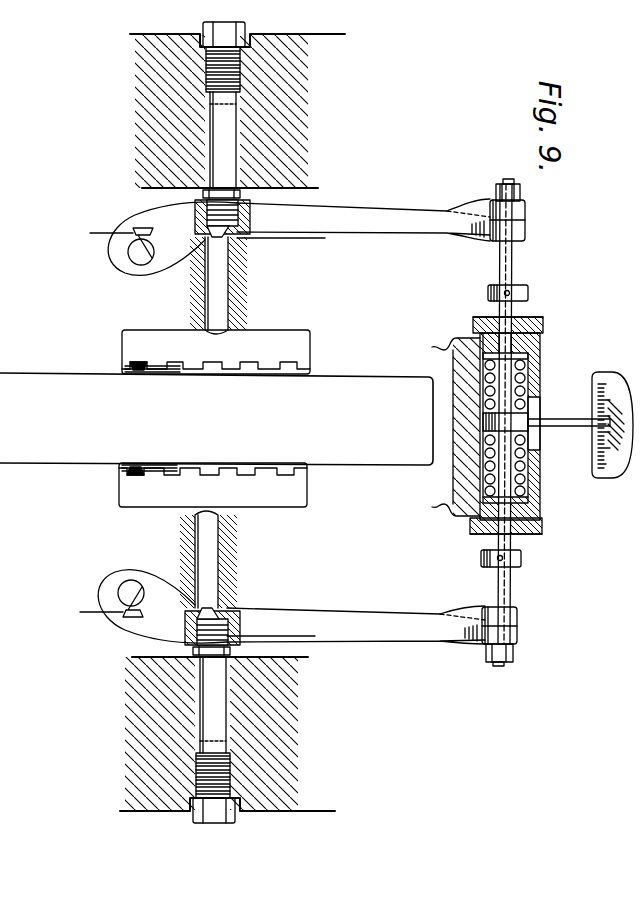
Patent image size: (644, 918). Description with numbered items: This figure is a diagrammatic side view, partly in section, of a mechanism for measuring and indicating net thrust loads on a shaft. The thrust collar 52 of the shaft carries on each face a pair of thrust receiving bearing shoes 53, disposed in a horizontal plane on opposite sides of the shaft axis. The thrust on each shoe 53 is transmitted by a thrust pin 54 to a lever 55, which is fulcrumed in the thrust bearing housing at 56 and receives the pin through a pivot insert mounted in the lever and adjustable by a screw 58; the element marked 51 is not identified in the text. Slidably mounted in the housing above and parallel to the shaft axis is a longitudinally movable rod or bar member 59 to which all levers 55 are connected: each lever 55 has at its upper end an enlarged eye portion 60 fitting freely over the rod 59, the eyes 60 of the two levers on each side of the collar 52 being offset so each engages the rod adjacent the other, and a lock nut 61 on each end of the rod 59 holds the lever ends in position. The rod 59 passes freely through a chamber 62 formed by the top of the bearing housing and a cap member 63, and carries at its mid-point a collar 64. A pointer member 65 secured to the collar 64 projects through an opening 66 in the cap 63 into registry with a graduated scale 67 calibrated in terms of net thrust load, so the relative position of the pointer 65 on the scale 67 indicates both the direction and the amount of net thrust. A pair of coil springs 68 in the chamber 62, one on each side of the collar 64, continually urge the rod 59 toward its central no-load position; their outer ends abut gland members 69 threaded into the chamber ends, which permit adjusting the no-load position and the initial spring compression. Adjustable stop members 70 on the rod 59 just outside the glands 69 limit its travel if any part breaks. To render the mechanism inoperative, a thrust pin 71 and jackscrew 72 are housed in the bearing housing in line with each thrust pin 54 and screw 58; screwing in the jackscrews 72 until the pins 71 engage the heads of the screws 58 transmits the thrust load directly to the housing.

The nut 51 is at (232, 231).
The thrust collar 52 is at (400, 482).
The thrust receiving bearing members or shoes 53 is at (142, 336).
The thrust pin 54 is at (225, 268).
The lever 55 is at (370, 215).
The fulcrum 56 is at (140, 246).
The screw 58 is at (203, 190).
The rod or bar member 59 is at (502, 578).
The eye portion 60 is at (513, 228).
The lock nut 61 is at (508, 193).
The chamber 62 is at (478, 336).
The cap member 63 is at (538, 371).
The collar 64 is at (483, 420).
The pointer member 65 is at (573, 426).
The opening 66 is at (537, 415).
The graduated scale 67 is at (613, 472).
The coil springs 68 is at (490, 355).
The gland members 69 is at (535, 318).
The stop members 70 is at (522, 291).
The thrust pin 71 is at (228, 117).
The jackscrew 72 is at (240, 40).